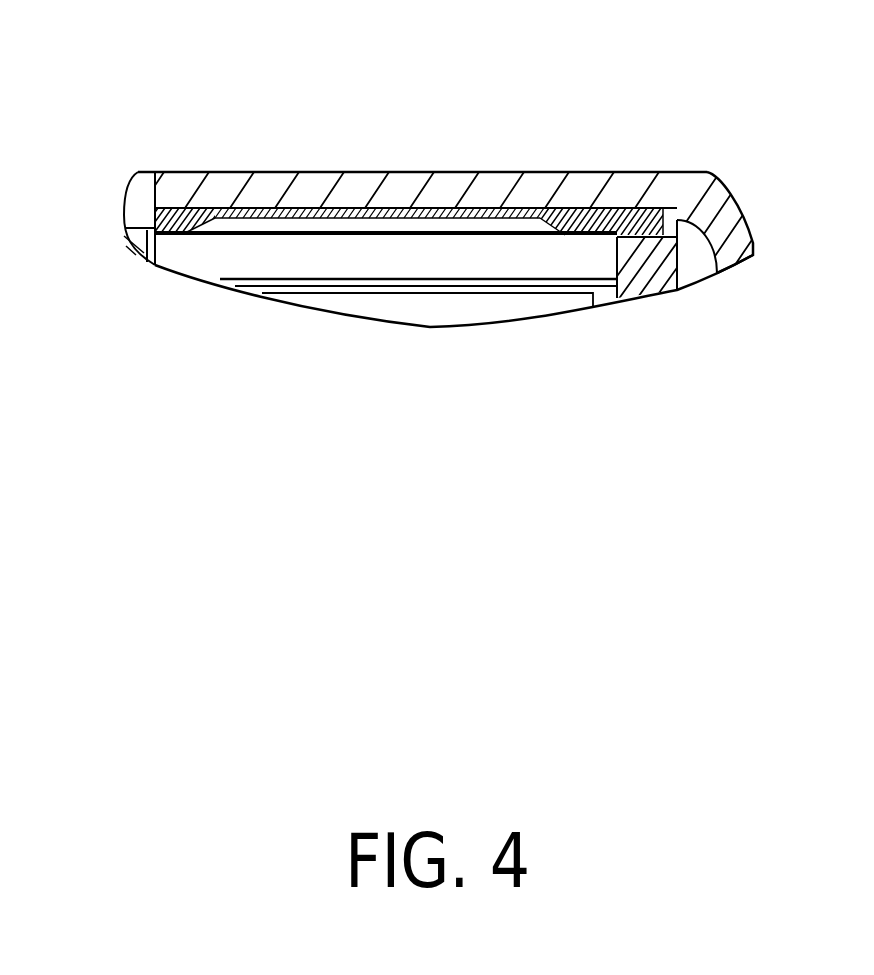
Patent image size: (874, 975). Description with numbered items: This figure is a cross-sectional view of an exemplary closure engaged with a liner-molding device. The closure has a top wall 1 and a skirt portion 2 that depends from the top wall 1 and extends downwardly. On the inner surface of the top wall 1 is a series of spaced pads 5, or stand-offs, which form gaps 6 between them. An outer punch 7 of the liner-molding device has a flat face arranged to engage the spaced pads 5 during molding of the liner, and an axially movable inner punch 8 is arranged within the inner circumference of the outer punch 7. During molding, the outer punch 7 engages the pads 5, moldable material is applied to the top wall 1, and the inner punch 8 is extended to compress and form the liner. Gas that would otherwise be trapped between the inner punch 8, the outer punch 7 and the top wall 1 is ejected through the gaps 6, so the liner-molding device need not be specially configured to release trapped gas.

The top wall 1 is at (355, 173).
The skirt portion 2 is at (753, 238).
The pads 5 is at (188, 205).
The gaps 6 is at (453, 211).
The outer punch 7 is at (652, 288).
The inner punch 8 is at (243, 258).